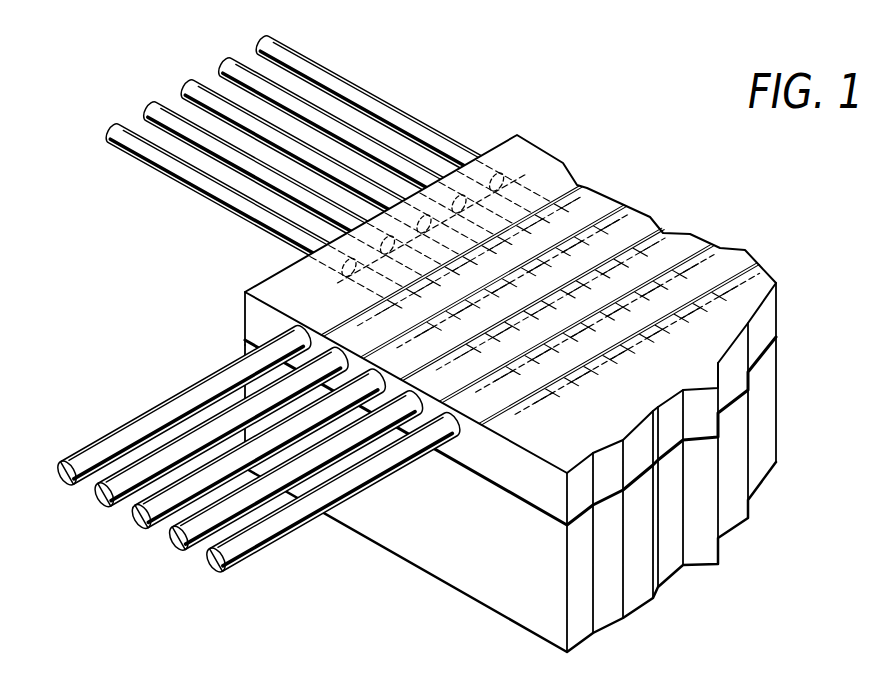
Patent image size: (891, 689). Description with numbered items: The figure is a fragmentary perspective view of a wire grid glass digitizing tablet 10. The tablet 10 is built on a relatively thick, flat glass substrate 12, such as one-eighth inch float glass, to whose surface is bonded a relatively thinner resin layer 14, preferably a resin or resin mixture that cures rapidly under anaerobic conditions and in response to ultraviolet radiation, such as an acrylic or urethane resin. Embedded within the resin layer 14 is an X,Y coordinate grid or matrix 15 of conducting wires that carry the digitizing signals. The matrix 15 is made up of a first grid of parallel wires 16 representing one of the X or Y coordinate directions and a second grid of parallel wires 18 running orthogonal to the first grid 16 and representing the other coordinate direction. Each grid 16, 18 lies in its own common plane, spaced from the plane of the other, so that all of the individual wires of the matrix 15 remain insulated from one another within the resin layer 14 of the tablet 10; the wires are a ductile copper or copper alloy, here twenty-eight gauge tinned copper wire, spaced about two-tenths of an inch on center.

The wire grid glass tablet 10 is at (497, 130).
The glass substrate 12 is at (346, 532).
The resin layer 14 is at (250, 284).
The X,Y coordinate grid or matrix 15 is at (148, 87).
The first grid of parallel wires 16 is at (230, 60).
The second grid of parallel wires 18 is at (268, 550).